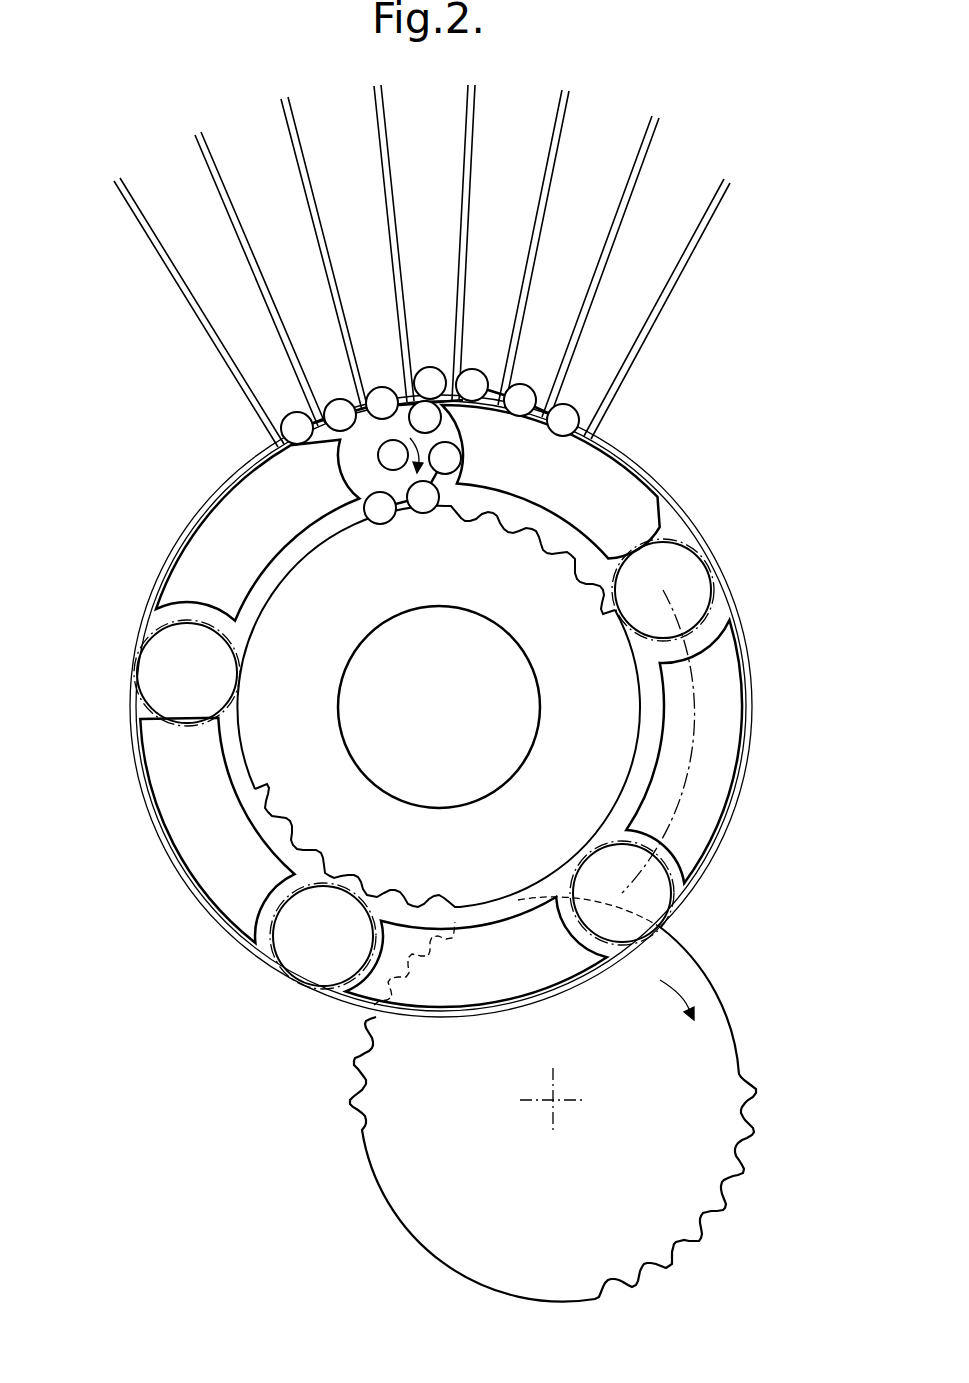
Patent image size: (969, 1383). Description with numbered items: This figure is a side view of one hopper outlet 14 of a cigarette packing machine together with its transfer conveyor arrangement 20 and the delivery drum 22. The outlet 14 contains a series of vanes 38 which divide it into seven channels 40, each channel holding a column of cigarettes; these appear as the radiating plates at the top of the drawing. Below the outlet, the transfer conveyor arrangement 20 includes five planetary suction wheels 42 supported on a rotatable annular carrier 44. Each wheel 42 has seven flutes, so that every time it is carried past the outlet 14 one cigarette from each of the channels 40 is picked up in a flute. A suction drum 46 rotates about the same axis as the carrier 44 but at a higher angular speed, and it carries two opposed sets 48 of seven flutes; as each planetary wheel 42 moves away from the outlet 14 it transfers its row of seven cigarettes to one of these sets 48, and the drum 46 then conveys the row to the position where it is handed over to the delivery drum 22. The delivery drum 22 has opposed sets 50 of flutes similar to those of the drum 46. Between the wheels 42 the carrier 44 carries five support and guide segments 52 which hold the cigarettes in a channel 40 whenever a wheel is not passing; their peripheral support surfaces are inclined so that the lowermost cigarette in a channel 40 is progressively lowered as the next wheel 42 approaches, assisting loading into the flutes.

The hopper outlet 14 is at (468, 248).
The transfer conveyor arrangement 20 is at (762, 640).
The delivery drum 22 is at (541, 1099).
The vanes 38 is at (290, 137).
The channels 40 is at (233, 290).
The planetary suction wheels 42 is at (360, 457).
The rotatable annular carrier 44 is at (688, 774).
The suction drum 46 is at (524, 706).
The sets of flutes 48 is at (456, 528).
The sets of flutes 50 is at (353, 1060).
The support and guide segments 52 is at (610, 490).